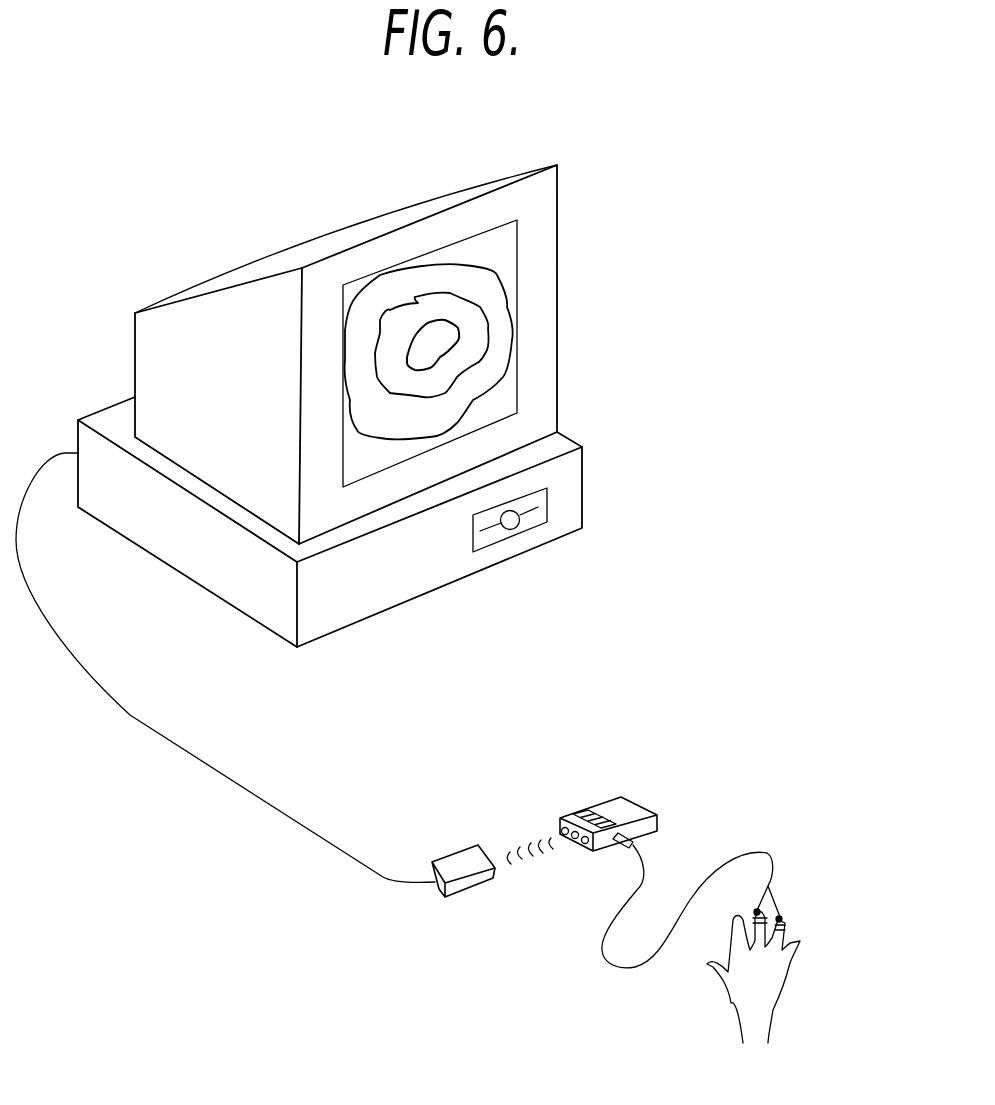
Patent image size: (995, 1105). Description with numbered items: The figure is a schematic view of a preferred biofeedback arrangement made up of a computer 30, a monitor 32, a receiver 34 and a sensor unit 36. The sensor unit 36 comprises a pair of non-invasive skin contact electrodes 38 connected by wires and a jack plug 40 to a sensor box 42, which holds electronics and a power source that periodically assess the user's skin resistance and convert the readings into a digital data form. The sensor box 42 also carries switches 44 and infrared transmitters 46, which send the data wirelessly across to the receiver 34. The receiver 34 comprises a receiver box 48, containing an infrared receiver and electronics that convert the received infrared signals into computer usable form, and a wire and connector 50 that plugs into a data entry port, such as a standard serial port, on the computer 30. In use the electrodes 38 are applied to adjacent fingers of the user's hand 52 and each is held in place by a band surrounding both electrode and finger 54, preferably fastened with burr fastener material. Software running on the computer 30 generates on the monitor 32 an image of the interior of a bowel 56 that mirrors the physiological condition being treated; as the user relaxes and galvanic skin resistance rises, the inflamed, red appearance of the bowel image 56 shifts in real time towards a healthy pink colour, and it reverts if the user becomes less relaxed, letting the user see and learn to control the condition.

The computer 30 is at (582, 490).
The monitor 32 is at (557, 240).
The receiver 34 is at (441, 878).
The sensor unit 36 is at (622, 818).
The non-invasive skin contact electrodes 38 is at (755, 911).
The jack plug 40 is at (765, 847).
The sensor box 42 is at (607, 792).
The switches 44 is at (580, 812).
The infrared transmitters 46 is at (583, 843).
The receiver box 48 is at (457, 862).
The wire and connector 50 is at (130, 718).
The user's hand 52 is at (763, 1000).
The band surrounding both electrode and finger 54 is at (776, 930).
The image of the interior of a bowel 56 is at (500, 322).